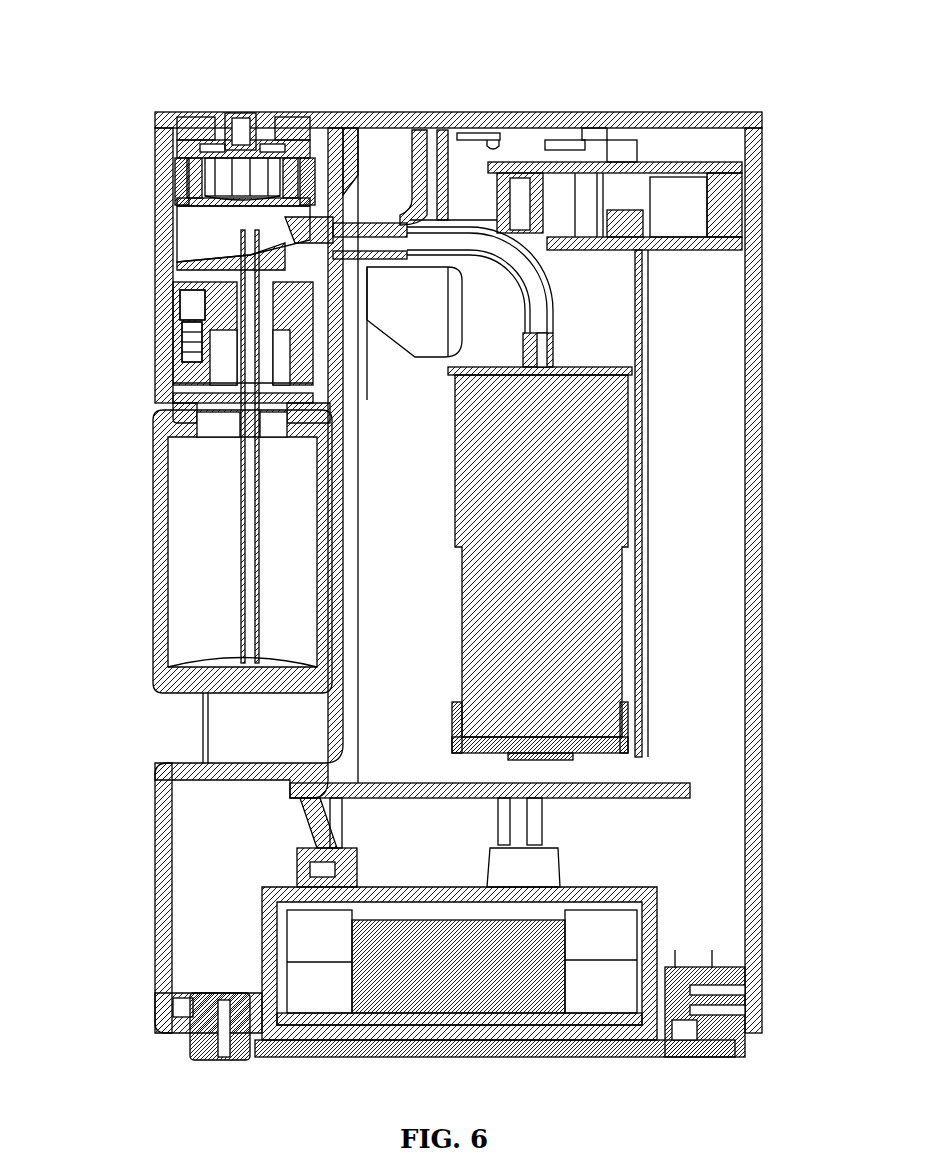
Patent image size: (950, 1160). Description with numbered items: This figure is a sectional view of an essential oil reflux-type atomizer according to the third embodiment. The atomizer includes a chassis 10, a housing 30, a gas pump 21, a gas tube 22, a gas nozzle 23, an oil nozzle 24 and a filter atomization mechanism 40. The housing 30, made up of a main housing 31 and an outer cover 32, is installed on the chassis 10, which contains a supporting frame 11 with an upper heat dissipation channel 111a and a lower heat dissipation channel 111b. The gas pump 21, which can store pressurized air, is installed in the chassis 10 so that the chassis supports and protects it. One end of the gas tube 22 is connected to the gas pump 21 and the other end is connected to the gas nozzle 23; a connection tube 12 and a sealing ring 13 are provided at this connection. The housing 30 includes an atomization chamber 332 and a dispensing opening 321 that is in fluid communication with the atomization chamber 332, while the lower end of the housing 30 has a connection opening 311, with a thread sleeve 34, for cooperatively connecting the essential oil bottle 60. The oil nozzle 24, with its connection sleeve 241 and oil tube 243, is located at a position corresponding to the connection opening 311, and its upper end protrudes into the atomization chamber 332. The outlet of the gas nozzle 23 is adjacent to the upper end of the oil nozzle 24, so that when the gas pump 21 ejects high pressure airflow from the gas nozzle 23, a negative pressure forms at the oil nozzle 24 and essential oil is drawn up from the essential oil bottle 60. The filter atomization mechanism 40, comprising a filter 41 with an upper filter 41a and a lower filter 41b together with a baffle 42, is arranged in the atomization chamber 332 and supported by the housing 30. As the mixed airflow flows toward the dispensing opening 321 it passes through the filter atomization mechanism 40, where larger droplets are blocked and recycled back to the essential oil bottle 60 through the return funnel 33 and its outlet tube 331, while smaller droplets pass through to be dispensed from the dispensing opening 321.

The chassis 10 is at (762, 668).
The supporting frame 11 is at (592, 507).
The upper heat dissipation channel 111a is at (648, 403).
The lower heat dissipation channel 111b is at (690, 792).
The connection tube 12 is at (445, 180).
The sealing ring 13 is at (415, 160).
The gas pump 21 is at (585, 680).
The gas tube 22 is at (553, 302).
The gas nozzle 23 is at (362, 173).
The oil nozzle 24 is at (166, 323).
The connection sleeve 241 is at (157, 323).
The oil tube 243 is at (240, 570).
The housing 30 is at (174, 160).
The main housing 31 is at (157, 178).
The connection opening 311 is at (157, 397).
The outer cover 32 is at (157, 140).
The dispensing opening 321 is at (234, 132).
The return funnel 33 is at (157, 302).
The outlet tube 331 is at (157, 345).
The atomization chamber 332 is at (208, 232).
The thread sleeve 34 is at (157, 368).
The filter atomization mechanism 40 is at (157, 203).
The filter 41 is at (272, 110).
The upper filter 41a is at (290, 128).
The lower filter 41b is at (340, 128).
The baffle 42 is at (205, 125).
The essential oil bottle 60 is at (153, 540).